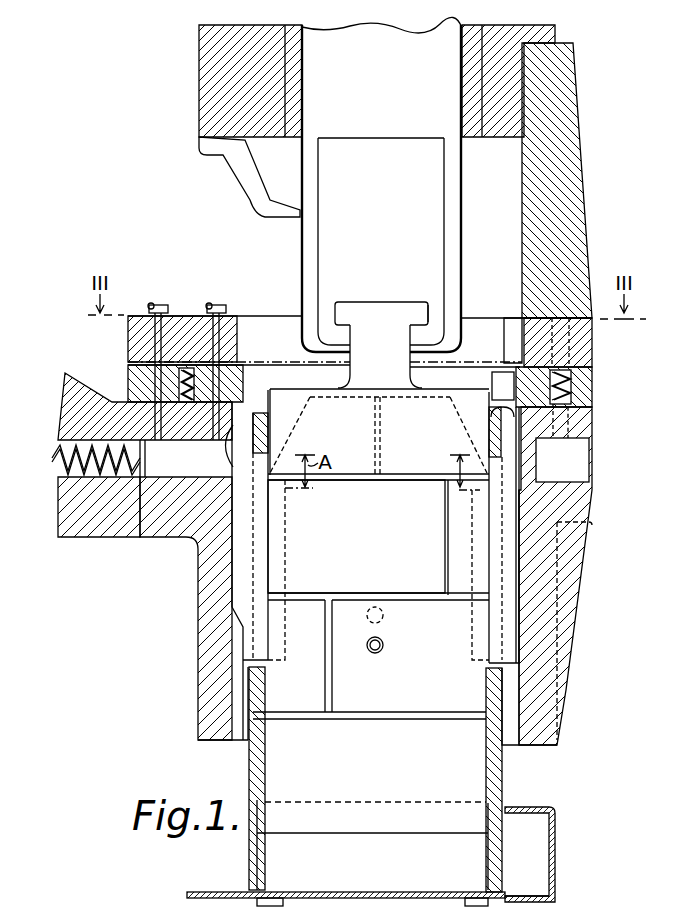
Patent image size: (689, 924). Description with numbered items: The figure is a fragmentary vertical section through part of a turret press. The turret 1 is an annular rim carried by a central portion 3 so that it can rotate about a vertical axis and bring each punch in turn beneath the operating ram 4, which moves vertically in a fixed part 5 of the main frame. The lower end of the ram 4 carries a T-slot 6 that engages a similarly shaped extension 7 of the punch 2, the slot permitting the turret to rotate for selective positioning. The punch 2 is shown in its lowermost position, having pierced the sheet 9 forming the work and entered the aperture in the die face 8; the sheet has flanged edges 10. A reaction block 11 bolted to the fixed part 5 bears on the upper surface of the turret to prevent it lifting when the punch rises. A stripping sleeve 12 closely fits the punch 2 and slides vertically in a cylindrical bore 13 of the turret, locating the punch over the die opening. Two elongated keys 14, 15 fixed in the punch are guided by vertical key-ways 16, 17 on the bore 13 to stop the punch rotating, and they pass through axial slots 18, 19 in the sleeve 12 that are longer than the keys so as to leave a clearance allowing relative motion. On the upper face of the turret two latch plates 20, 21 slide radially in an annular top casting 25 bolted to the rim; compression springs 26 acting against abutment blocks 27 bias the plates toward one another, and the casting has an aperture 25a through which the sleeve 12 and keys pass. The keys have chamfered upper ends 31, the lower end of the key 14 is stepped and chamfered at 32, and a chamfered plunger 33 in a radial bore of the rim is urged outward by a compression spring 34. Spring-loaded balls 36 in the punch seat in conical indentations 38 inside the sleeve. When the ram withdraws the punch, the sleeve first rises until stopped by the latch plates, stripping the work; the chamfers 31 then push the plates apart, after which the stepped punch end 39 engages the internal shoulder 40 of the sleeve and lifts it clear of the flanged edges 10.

The turret 1 is at (585, 511).
The punch 2 is at (273, 898).
The central portion 3 is at (95, 392).
The operating ram 4 is at (452, 128).
The fixed part 5 is at (553, 38).
The T-slot 6 is at (432, 316).
The extension 7 is at (385, 312).
The die face 8 is at (518, 900).
The sheet 9 is at (215, 892).
The flanged edges 10 is at (553, 846).
The reaction block 11 is at (560, 168).
The sleeve 12 is at (490, 766).
The cylindrical bore 13 is at (244, 752).
The elongated key 14 is at (240, 584).
The elongated key 15 is at (510, 631).
The vertical key-way 16 is at (236, 673).
The vertical key-way 17 is at (510, 699).
The axial slot 18 is at (262, 483).
The axial slot 19 is at (495, 473).
The latch plate 20 is at (240, 395).
The latch plate 21 is at (502, 381).
The annular top casting 25 is at (192, 327).
The aperture 25a is at (506, 330).
The compression springs 26 is at (186, 378).
The abutment blocks 27 is at (132, 374).
The chamfered end 31 is at (232, 441).
The stepped and chamfered lower end 32 is at (232, 621).
The plunger 33 is at (167, 478).
The compression spring 34 is at (108, 478).
The balls 36 is at (384, 648).
The conical indentations 38 is at (384, 618).
The stepped lower end 39 is at (490, 829).
The internal shoulder 40 is at (489, 801).